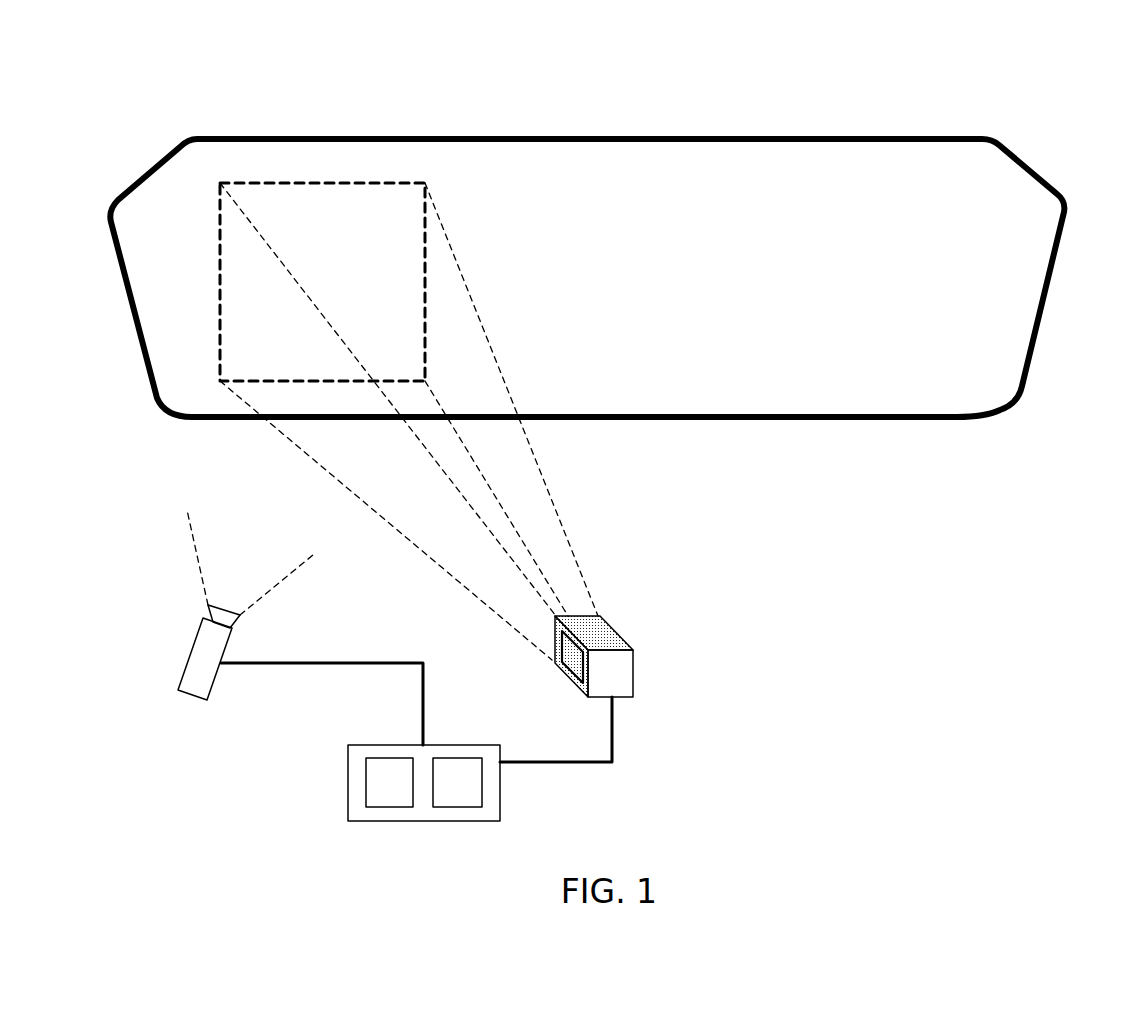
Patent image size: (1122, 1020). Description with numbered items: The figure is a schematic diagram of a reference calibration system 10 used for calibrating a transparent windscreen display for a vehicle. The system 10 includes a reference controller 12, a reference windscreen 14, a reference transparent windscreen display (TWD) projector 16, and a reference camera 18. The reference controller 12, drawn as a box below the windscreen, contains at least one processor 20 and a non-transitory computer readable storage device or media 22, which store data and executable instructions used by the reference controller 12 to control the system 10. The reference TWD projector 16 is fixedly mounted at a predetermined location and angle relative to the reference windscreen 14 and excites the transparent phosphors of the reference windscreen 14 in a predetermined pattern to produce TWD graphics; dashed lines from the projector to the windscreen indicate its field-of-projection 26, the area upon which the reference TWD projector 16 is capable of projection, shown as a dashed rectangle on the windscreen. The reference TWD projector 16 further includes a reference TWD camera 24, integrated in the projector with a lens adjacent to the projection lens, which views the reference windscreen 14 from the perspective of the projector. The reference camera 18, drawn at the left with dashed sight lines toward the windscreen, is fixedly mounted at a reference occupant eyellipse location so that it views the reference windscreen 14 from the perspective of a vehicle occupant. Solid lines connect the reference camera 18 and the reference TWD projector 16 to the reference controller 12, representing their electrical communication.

The reference calibration system 10 is at (95, 110).
The reference controller 12 is at (424, 814).
The reference windscreen 14 is at (805, 421).
The reference transparent windscreen display (TWD) projector 16 is at (631, 657).
The reference camera 18 is at (208, 702).
The processor 20 is at (389, 782).
The non-transitory computer readable storage device or media 22 is at (456, 822).
The reference TWD camera 24 is at (574, 678).
The field-of-projection 26 is at (389, 183).